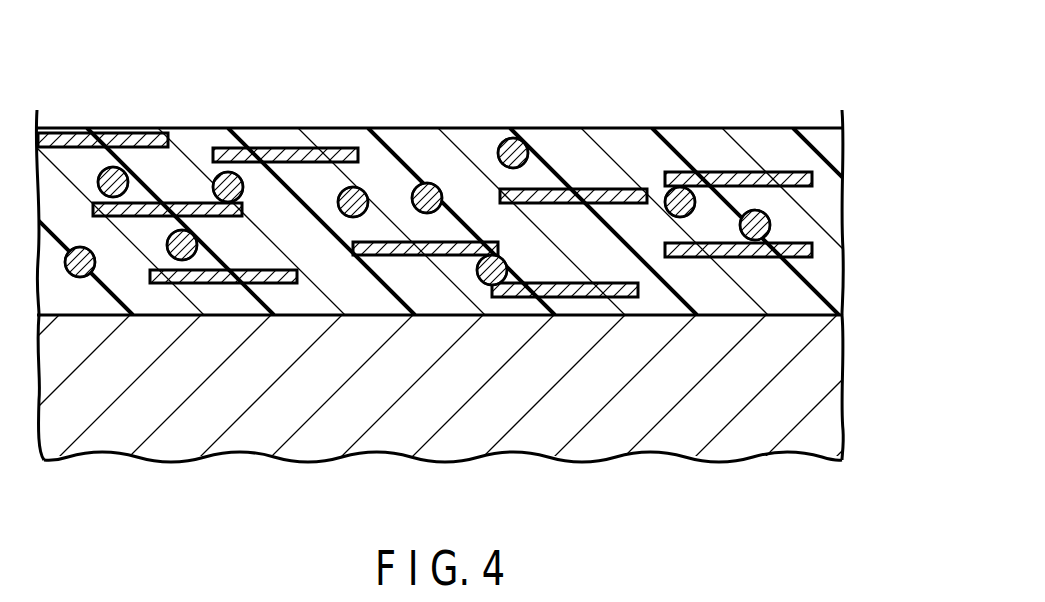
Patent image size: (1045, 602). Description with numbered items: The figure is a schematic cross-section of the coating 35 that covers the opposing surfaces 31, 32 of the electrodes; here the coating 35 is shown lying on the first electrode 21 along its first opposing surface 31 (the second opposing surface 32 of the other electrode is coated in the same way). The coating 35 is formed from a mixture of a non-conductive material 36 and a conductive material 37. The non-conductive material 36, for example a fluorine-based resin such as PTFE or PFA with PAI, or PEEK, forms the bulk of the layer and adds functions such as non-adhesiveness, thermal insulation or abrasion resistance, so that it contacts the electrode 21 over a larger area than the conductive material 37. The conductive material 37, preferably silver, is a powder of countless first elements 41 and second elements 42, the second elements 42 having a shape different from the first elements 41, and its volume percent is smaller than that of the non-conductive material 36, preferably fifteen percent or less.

The first electrode 21 is at (815, 374).
The first opposing surface 31 is at (812, 312).
The second opposing surface 32 is at (489, 368).
The coating 35 is at (745, 138).
The non-conductive material 36 is at (600, 138).
The conductive material 37 is at (425, 158).
The first elements 41 is at (158, 132).
The second elements 42 is at (428, 183).